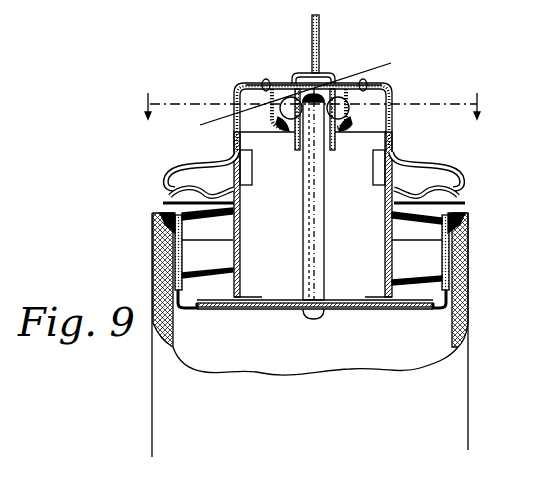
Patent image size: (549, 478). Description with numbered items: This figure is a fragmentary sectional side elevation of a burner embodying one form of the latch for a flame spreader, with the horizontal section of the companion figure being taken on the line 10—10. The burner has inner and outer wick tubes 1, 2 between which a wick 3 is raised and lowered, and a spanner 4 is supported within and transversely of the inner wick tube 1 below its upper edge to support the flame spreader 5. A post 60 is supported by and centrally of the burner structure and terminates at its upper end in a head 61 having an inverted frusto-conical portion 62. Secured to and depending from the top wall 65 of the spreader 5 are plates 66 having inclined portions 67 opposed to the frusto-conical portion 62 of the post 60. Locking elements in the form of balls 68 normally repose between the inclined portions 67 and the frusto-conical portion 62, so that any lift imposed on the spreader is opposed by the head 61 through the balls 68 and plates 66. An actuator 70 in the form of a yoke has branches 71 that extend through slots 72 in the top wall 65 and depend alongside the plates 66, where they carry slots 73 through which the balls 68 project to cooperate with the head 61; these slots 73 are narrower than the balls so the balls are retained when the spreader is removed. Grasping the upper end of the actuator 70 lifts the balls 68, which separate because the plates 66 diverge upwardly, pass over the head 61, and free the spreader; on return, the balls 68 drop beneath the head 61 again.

The inner wick tube 1 is at (176, 322).
The outer wick tube 2 is at (450, 387).
The wick 3 is at (153, 257).
The spanner 4 is at (348, 311).
The flame spreader 5 is at (399, 155).
The section line 10— 10 is at (313, 106).
The post 60 is at (323, 212).
The head 61 is at (336, 82).
The inverted frusto-conical portion 62 is at (308, 118).
The top wall 65 is at (393, 86).
The plates 66 is at (350, 104).
The inclined portions 67 is at (352, 115).
The balls 68 is at (350, 128).
The actuator 70 is at (320, 44).
The branches 71 is at (331, 138).
The slots 72 is at (296, 82).
The slots 73 is at (292, 95).